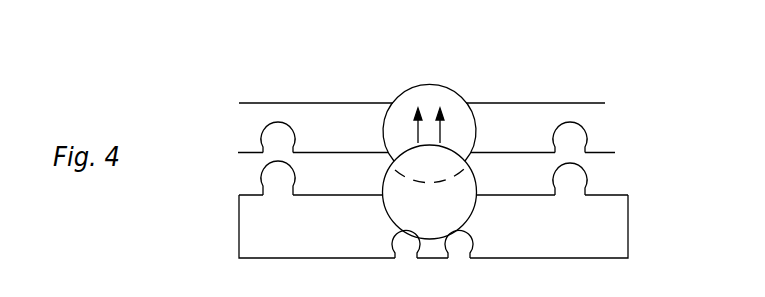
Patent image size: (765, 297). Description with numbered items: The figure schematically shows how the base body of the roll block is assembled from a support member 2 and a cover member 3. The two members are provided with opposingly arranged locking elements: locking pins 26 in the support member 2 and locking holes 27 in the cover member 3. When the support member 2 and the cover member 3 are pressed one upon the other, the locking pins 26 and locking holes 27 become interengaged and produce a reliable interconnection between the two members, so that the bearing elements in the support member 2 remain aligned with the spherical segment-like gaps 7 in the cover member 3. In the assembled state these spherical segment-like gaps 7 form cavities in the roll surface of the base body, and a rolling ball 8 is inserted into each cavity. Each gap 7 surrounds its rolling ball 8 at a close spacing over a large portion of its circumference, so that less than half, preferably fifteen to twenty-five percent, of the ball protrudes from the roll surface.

The support member 2 is at (610, 228).
The cover member 3 is at (598, 113).
The spherical segment-like gap 7 is at (465, 167).
The rolling ball 8 is at (472, 188).
The locking pin 26 is at (275, 180).
The locking hole 27 is at (272, 138).